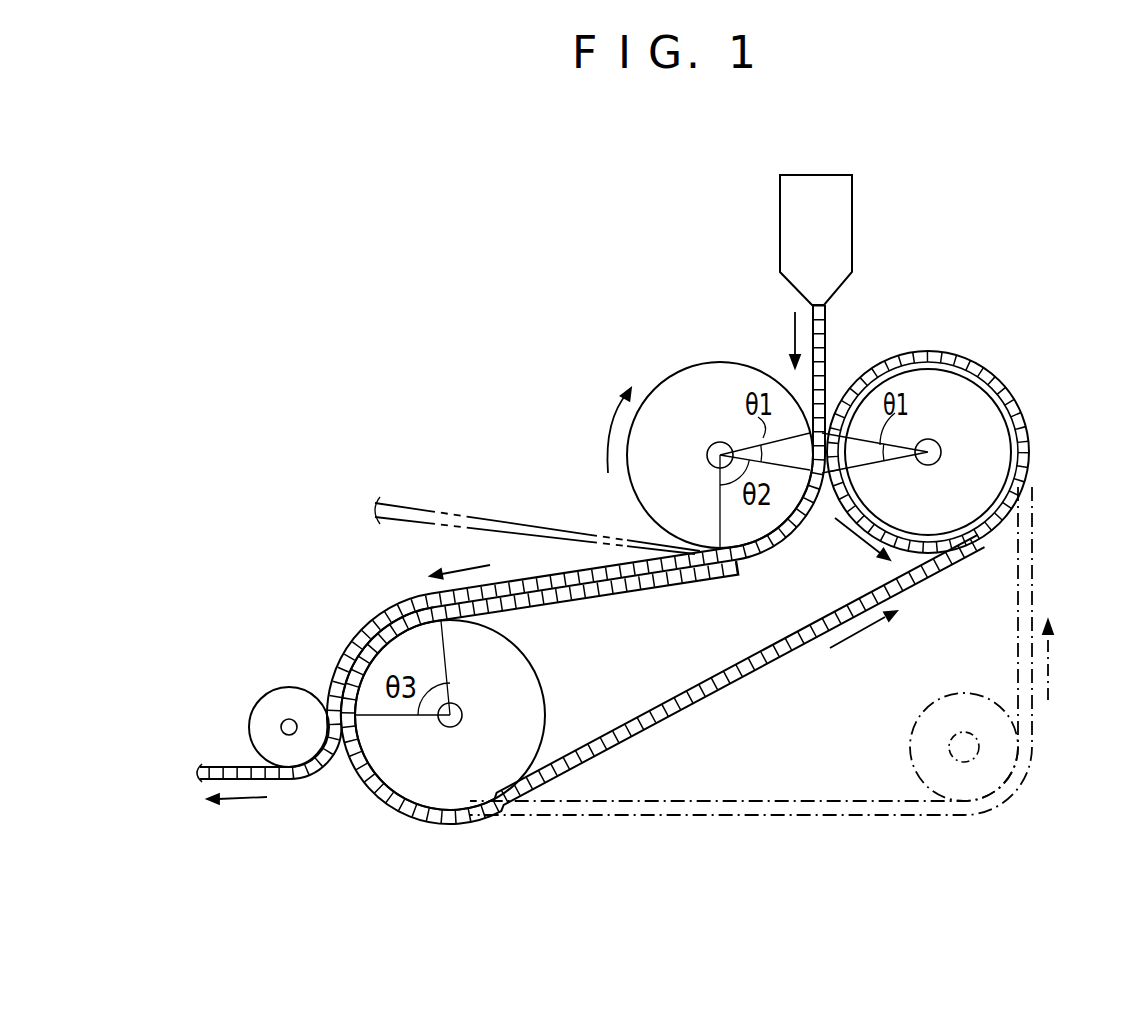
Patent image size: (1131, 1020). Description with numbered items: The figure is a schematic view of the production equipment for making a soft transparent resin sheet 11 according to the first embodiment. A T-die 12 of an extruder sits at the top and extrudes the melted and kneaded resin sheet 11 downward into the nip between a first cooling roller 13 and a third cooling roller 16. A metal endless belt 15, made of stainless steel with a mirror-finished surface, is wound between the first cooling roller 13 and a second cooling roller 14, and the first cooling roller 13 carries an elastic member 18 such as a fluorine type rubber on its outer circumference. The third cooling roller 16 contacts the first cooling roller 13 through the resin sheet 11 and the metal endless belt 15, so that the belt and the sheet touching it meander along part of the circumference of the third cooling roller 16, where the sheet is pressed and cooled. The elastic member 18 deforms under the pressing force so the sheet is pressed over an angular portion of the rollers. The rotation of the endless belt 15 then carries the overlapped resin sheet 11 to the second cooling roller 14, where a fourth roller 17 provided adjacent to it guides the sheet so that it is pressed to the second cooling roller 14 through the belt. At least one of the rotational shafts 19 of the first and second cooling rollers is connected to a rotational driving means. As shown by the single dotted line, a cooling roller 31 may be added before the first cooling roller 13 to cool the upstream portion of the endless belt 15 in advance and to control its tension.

The resin sheet 11 is at (413, 503).
The T-die 12 is at (842, 237).
The first cooling roller 13 is at (983, 422).
The second cooling roller 14 is at (459, 775).
The metal endless belt 15 is at (763, 660).
The third cooling roller 16 is at (682, 398).
The fourth roller 17 is at (280, 708).
The elastic member 18 is at (958, 358).
The rotational shaft 19 is at (942, 457).
The cooling roller 31 is at (912, 745).